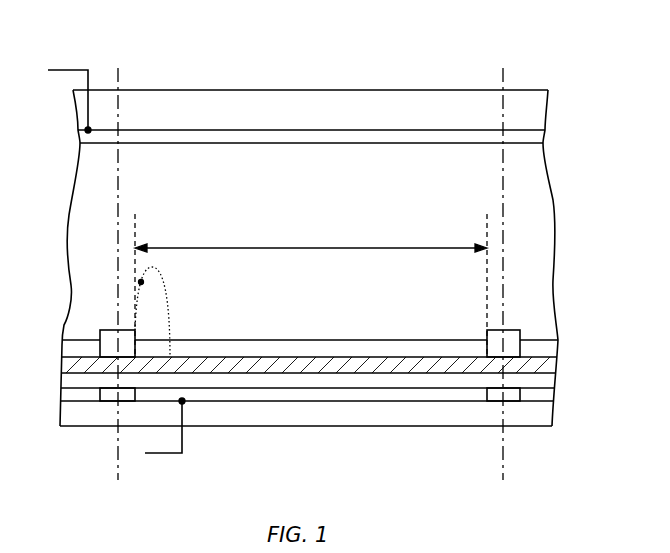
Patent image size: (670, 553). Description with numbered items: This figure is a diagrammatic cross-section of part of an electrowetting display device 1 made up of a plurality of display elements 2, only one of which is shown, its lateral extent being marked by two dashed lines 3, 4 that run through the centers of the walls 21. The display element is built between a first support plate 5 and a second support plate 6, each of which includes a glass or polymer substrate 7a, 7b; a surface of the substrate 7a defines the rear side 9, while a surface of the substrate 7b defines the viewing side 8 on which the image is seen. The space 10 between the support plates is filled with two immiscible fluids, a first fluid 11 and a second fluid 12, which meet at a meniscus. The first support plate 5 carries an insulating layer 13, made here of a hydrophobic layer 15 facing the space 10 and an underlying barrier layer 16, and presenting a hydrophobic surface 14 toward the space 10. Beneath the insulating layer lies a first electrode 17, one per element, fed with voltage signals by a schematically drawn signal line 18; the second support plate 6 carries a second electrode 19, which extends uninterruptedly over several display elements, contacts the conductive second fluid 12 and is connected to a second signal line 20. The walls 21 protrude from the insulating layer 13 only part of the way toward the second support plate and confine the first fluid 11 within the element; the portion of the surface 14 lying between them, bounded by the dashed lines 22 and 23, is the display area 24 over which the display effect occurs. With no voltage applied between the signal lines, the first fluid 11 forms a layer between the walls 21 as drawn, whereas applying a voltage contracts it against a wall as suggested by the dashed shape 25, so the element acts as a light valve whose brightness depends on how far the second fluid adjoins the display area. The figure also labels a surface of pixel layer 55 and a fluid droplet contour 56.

The electrowetting display device 1 is at (622, 60).
The display element 2 is at (310, 50).
The dashed line 3 is at (120, 73).
The dashed line 4 is at (505, 73).
The first support plate 5 is at (608, 340).
The second support plate 6 is at (565, 90).
The substrate 7a is at (530, 418).
The substrate 7b is at (445, 115).
The viewing side 8 is at (208, 90).
The rear side 9 is at (270, 428).
The space 10 is at (378, 155).
The first fluid 11 is at (453, 347).
The second fluid 12 is at (548, 221).
The insulating layer 13 is at (565, 358).
The surface 14 is at (353, 357).
The hydrophobic layer 15 is at (305, 370).
The barrier layer 16 is at (258, 378).
The first electrode 17 is at (378, 393).
The signal line 18 is at (165, 455).
The second electrode 19 is at (106, 135).
The second signal line 20 is at (66, 70).
The walls 21 is at (110, 343).
The dashed line 22 is at (485, 217).
The dashed line 23 is at (138, 217).
The display area 24 is at (311, 237).
The dashed shape 25 is at (142, 282).
The surface of pixel layer 55 is at (403, 342).
The fluid droplet contour 56 is at (167, 303).